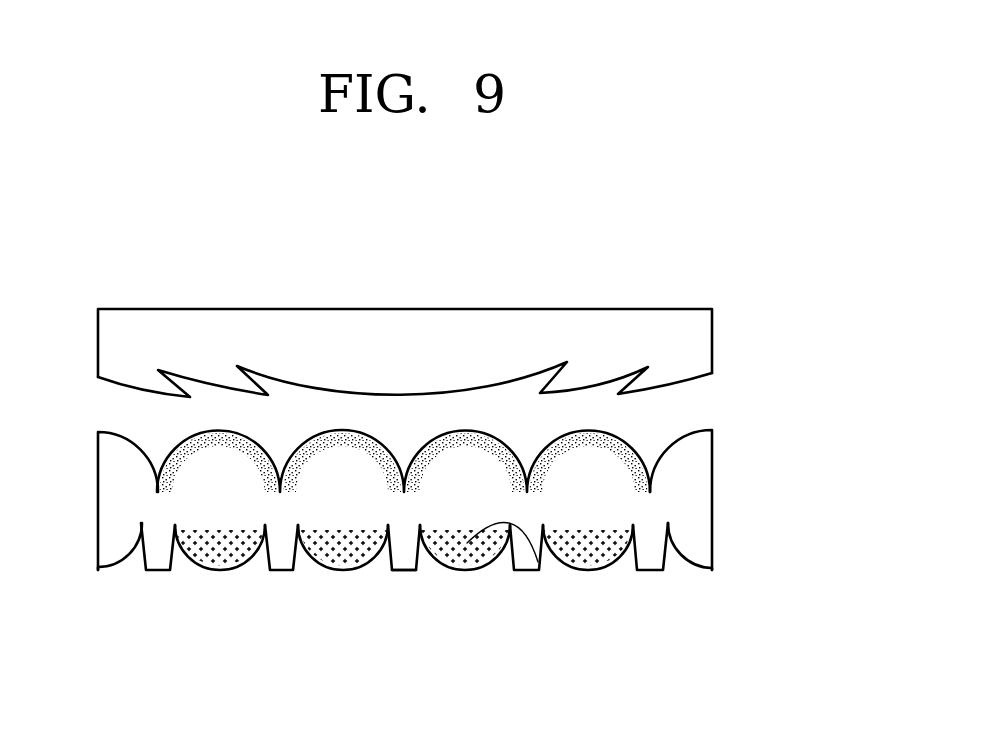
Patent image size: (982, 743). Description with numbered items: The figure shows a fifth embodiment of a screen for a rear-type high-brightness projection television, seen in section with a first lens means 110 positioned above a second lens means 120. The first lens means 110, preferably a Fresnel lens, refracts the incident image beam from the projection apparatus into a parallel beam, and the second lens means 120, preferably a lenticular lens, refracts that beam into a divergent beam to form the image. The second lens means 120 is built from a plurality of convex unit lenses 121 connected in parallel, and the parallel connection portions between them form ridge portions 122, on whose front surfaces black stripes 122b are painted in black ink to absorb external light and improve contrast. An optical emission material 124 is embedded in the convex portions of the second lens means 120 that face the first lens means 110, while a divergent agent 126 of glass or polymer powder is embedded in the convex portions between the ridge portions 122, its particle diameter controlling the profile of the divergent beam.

The first lens means 110 is at (697, 340).
The second lens means 120 is at (697, 499).
The unit lenses 121 is at (337, 565).
The ridge portions 122 is at (537, 557).
The black stripes 122b is at (400, 572).
The optical emission material 124 is at (338, 432).
The divergent agent 126 is at (208, 555).